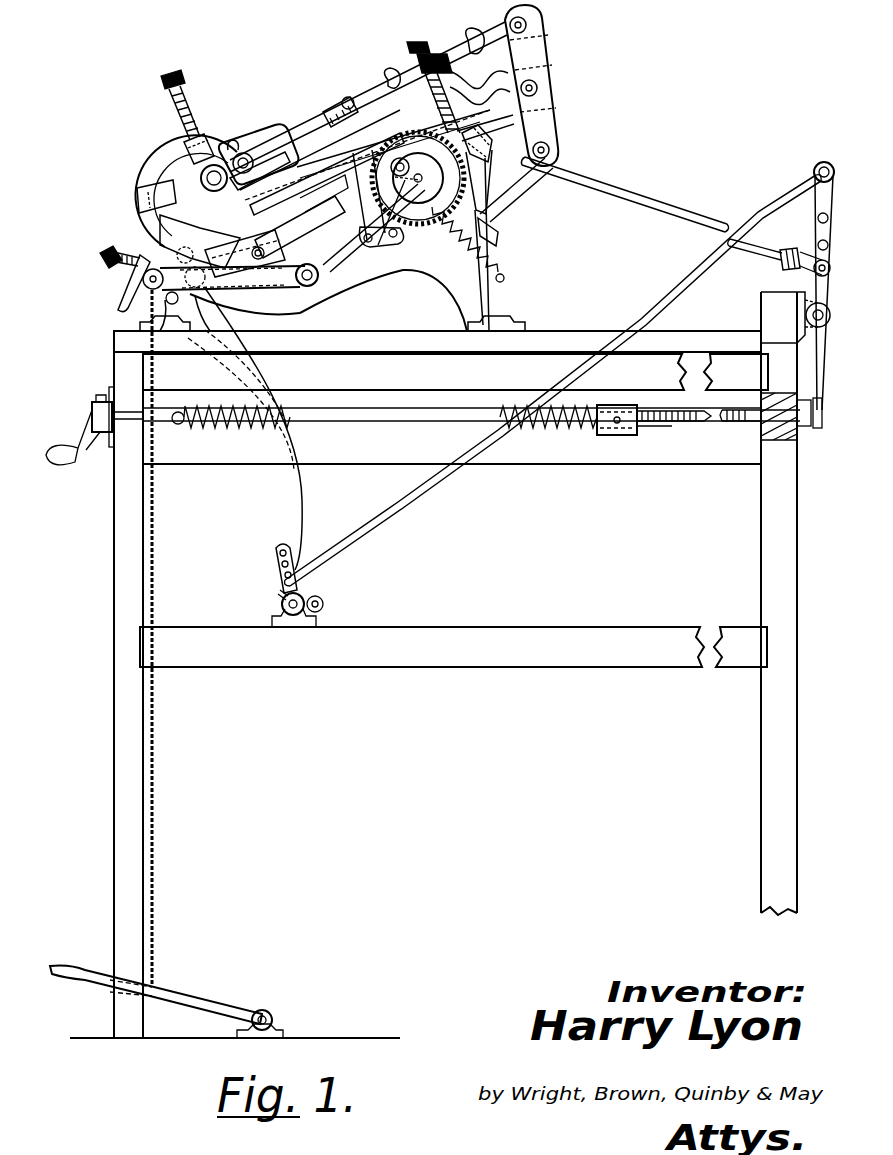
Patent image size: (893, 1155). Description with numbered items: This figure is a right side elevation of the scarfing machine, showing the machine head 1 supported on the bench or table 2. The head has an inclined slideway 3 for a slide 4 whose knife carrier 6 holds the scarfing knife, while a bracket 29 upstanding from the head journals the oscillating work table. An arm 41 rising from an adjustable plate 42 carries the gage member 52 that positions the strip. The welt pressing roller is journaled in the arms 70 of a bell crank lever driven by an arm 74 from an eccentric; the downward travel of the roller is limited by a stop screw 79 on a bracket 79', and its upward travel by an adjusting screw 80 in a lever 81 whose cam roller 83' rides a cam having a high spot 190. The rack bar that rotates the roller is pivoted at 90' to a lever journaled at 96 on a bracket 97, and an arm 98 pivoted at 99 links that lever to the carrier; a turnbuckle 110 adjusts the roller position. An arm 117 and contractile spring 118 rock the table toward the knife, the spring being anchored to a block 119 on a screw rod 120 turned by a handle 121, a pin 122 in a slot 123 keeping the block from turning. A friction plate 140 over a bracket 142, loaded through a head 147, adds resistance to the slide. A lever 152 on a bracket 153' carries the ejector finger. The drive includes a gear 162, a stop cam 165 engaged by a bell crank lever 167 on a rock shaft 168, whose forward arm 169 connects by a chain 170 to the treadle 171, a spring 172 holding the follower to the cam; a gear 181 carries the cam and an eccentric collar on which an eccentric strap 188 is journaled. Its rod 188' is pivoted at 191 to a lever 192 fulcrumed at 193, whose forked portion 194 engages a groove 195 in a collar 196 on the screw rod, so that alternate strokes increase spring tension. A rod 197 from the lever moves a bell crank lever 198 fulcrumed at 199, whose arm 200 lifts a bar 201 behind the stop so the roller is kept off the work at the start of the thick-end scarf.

The machine head 1 is at (456, 284).
The bench or table 2 is at (114, 602).
The slideway 3 is at (292, 46).
The slide 4 is at (280, 252).
The knife carrier 6 is at (268, 140).
The bracket 29 is at (162, 158).
The arm 41 is at (195, 242).
The plate 42 is at (245, 253).
The gage member 52 is at (148, 192).
The arms of bell crank lever 70 is at (201, 178).
The arm 74 is at (290, 306).
The stop screw 79 is at (120, 243).
The bracket 79' is at (119, 289).
The adjusting screw 80 is at (186, 118).
The lever 81 is at (285, 128).
The cam roller 83' is at (340, 96).
The pivot 90' is at (551, 85).
The pivot 96 is at (550, 150).
The bracket 97 is at (515, 203).
The arm 98 is at (449, 91).
The pivot 99 is at (540, 88).
The turnbuckle 110 is at (430, 42).
The arm 117 is at (178, 412).
The contractile spring 118 is at (228, 430).
The block 119 is at (624, 436).
The screw rod 120 is at (694, 420).
The handle 121 is at (84, 402).
The pin 122 is at (614, 424).
The slot 123 is at (654, 430).
The friction plate 140 is at (498, 122).
The bracket 142 is at (478, 172).
The head 147 is at (392, 65).
The lever 152 is at (260, 157).
The bracket 153' is at (391, 226).
The gear 162 is at (500, 226).
The stop cam 165 is at (452, 205).
The bell crank lever 167 is at (373, 228).
The rock shaft 168 is at (378, 292).
The forward arm 169 is at (258, 290).
The chain 170 is at (154, 565).
The treadle 171 is at (184, 996).
The spring 172 is at (488, 262).
The gear 181 is at (327, 127).
The eccentric strap 188 is at (729, 252).
The rod 188' is at (624, 194).
The high spot 190 is at (355, 100).
The pivot 191 is at (805, 270).
The lever 192 is at (820, 201).
The fulcrum 193 is at (810, 315).
The forked portion 194 is at (806, 428).
The groove 195 is at (820, 430).
The collar 196 is at (800, 400).
The rod 197 is at (456, 465).
The bell crank lever 198 is at (272, 570).
The fulcrum 199 is at (284, 606).
The arm 200 is at (320, 598).
The bar 201 is at (300, 512).